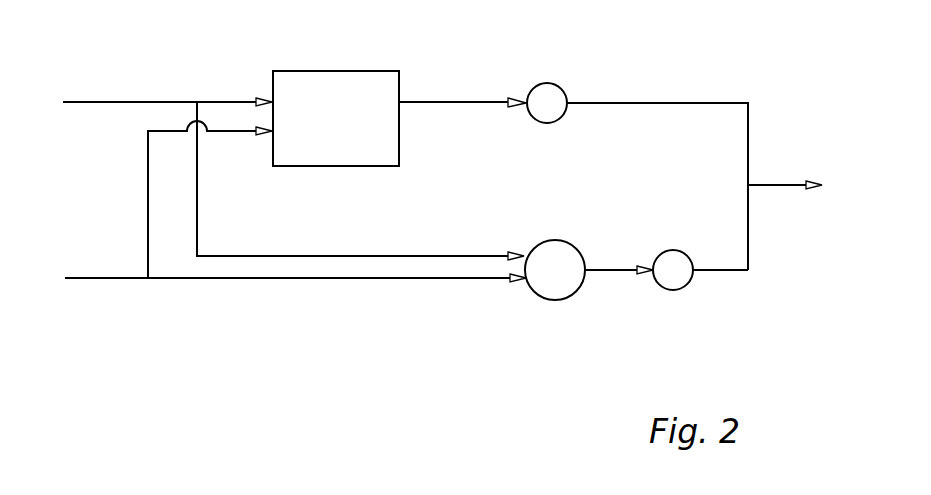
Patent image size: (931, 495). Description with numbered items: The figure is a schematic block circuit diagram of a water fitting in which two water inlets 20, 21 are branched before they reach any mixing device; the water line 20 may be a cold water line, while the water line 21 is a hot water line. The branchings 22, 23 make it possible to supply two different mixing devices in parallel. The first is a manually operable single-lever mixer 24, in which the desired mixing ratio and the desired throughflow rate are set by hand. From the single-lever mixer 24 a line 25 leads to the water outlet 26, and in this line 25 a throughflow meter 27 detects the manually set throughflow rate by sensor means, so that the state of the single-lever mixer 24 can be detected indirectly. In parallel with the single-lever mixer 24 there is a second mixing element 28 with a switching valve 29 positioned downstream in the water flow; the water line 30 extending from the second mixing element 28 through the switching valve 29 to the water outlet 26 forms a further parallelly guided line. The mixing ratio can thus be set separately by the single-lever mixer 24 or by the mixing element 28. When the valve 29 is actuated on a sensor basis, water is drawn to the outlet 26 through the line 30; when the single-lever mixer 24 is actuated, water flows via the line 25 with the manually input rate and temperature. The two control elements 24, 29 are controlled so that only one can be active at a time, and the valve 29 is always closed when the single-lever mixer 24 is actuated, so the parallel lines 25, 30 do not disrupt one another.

The water inlet 20 is at (115, 100).
The water inlet 21 is at (110, 280).
The branching 22 is at (150, 282).
The branching 23 is at (196, 100).
The single-lever mixer 24 is at (336, 71).
The line 25 is at (453, 102).
The water outlet 26 is at (785, 185).
The throughflow meter 27 is at (562, 90).
The second mixing element 28 is at (550, 293).
The switching valve 29 is at (680, 289).
The water line 30 is at (611, 270).